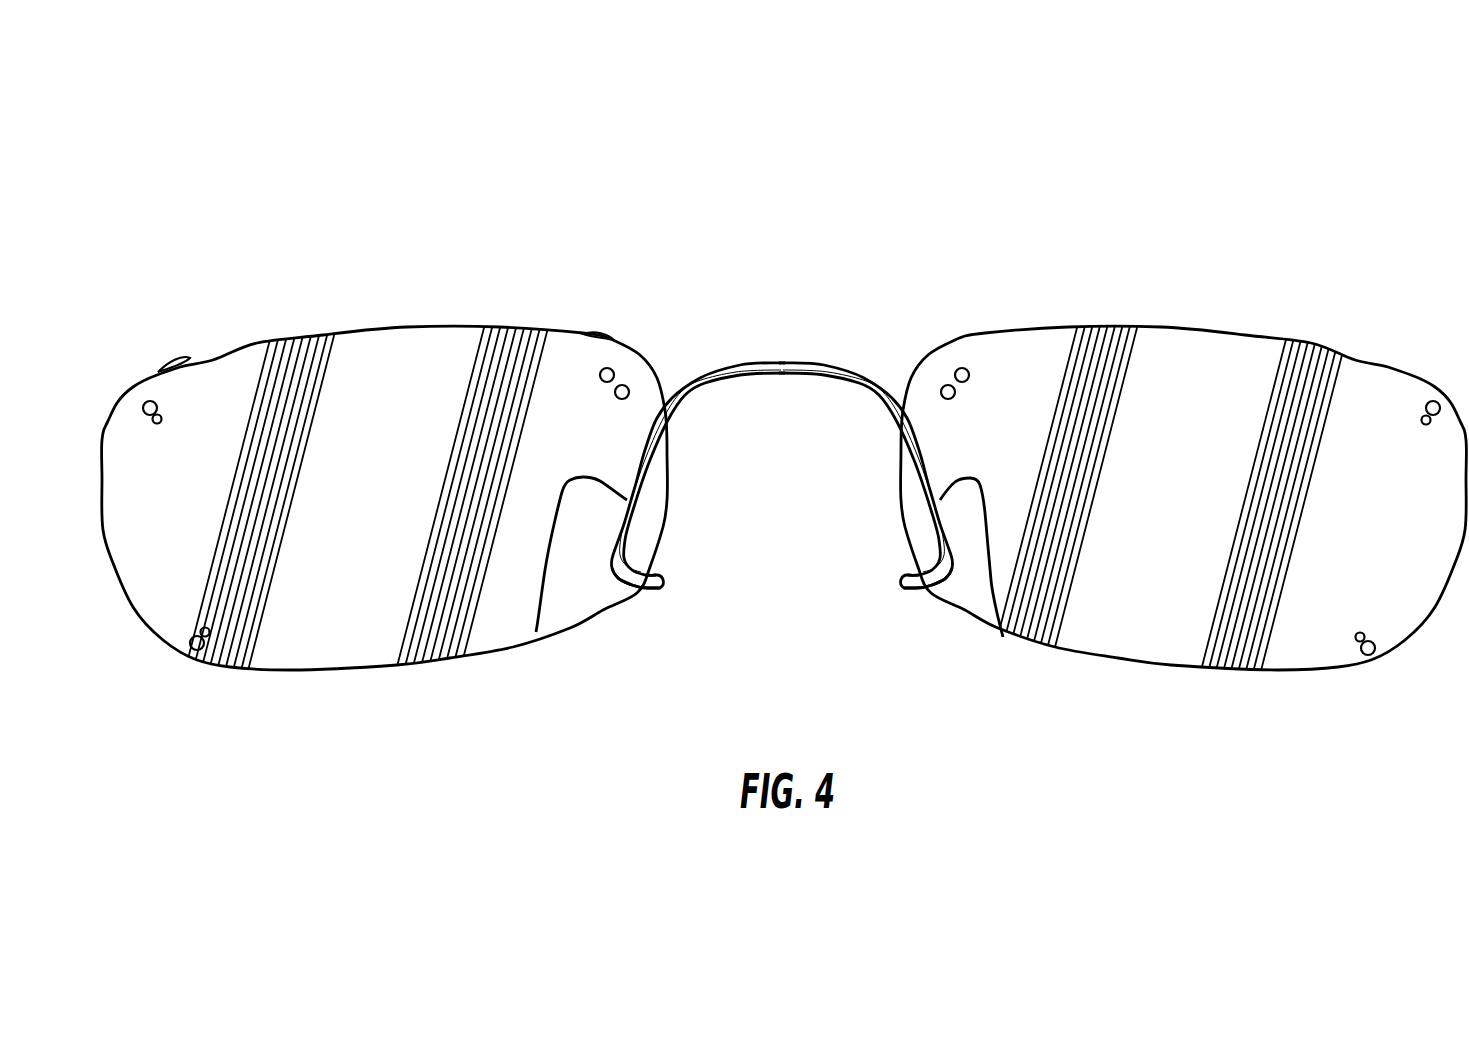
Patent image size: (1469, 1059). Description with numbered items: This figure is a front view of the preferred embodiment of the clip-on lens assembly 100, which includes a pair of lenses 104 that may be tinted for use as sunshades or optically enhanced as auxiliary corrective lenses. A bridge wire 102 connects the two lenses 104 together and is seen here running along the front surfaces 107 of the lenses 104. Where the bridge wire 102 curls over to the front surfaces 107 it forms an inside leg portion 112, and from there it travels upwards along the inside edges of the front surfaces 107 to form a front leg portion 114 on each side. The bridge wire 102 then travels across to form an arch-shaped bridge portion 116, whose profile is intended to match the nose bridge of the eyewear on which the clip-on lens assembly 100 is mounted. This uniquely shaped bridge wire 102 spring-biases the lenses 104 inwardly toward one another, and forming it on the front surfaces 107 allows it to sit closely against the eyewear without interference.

The clip-on lens assembly 100 is at (195, 157).
The bridge wire 102 is at (804, 350).
The lenses 104 is at (393, 518).
The front surfaces 107 is at (318, 623).
The inside leg portion 112 is at (668, 588).
The front leg portion 114 is at (536, 632).
The bridge portion 116 is at (722, 363).